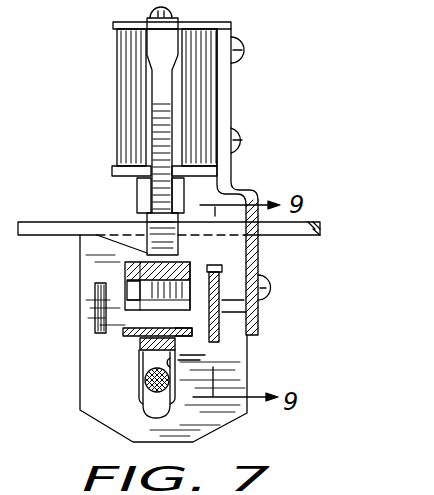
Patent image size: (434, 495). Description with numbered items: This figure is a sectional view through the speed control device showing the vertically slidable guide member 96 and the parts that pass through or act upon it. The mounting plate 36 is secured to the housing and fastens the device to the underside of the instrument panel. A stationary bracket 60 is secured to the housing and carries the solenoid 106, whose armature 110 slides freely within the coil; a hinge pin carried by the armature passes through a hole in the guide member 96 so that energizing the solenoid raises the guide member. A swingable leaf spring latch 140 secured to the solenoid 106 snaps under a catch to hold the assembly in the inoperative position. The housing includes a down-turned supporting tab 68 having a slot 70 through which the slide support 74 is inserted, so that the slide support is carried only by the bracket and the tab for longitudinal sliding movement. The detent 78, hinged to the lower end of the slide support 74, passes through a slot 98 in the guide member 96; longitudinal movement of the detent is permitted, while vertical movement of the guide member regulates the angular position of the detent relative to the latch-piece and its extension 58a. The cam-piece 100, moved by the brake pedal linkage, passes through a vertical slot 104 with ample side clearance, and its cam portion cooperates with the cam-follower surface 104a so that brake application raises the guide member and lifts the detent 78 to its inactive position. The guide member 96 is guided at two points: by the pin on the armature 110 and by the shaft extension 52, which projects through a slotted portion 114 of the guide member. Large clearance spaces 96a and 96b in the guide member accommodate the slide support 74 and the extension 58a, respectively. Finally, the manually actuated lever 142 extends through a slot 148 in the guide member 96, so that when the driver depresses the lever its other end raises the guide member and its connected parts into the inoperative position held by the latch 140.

The solenoid 106 is at (118, 64).
The leaf spring latch 140 is at (156, 95).
The armature 110 is at (143, 188).
The mounting plate 36 is at (46, 228).
The stationary bracket 60 is at (226, 112).
The guide member 96 is at (120, 418).
The supporting tab 68 is at (163, 292).
The slide support 74 is at (137, 270).
The slot 70 is at (190, 265).
The clearance space 96a is at (131, 292).
The slot 148 is at (100, 295).
The manually actuated lever 142 is at (100, 313).
The slot 98 is at (127, 333).
The extension 58a is at (136, 352).
The detent 78 is at (183, 338).
The slotted portion 114 is at (147, 403).
The shaft extension 52 is at (145, 387).
The cam-follower surface 104a is at (221, 277).
The vertical slot 104 is at (220, 334).
The cam-piece 100 is at (258, 313).
The clearance space 96b is at (178, 360).